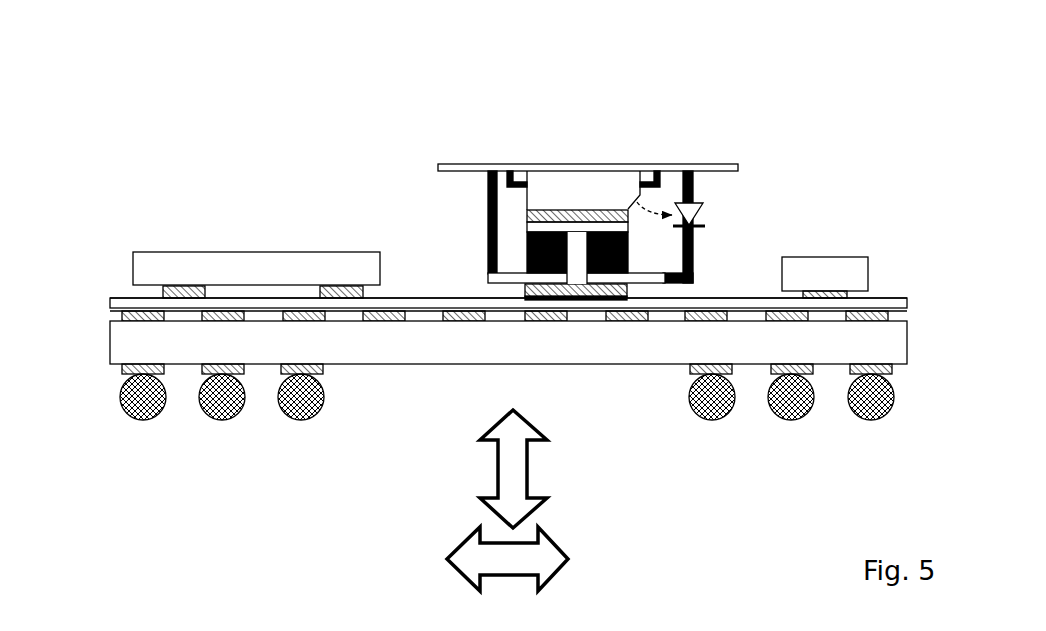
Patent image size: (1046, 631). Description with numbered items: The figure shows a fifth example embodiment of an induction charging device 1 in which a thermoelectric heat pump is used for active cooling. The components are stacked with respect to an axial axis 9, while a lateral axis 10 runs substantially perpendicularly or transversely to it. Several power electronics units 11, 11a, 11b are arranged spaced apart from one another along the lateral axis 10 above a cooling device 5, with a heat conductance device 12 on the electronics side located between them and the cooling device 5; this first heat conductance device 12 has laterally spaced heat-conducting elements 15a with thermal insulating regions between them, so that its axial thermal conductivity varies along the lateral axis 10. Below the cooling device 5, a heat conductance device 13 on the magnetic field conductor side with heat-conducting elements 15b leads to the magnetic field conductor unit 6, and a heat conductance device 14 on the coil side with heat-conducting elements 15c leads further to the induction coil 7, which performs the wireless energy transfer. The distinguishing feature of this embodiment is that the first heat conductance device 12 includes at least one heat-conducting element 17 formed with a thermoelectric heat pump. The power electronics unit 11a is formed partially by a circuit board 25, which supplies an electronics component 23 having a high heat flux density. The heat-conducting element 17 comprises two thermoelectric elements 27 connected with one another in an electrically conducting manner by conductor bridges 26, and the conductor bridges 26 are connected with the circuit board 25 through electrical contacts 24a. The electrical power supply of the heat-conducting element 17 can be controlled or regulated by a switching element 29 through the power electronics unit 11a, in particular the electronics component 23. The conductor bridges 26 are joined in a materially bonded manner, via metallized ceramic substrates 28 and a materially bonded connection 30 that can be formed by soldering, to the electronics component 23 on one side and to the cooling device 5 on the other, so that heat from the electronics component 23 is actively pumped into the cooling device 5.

The induction charging device 1 is at (93, 122).
The cooling device 5 is at (113, 297).
The magnetic field conductor unit 6 is at (122, 348).
The induction coil 7 is at (213, 415).
The axial axis 9 is at (512, 470).
The lateral axis 10 is at (485, 556).
The power electronics unit 11 is at (218, 230).
The power electronics unit 11a is at (563, 153).
The power electronics unit 11b is at (831, 275).
The heat conductance device on the electronics side 12 is at (885, 294).
The heat conductance device on the magnetic field conductor side 13 is at (504, 314).
The heat conductance device on the coil side 14 is at (505, 387).
The heat-conducting elements 15a is at (170, 287).
The heat-conducting elements 15b is at (122, 314).
The heat-conducting elements 15c is at (120, 374).
The heat-conducting element 17 is at (563, 175).
The electronics component 23 is at (537, 202).
The electrical contacts 24a is at (485, 185).
The circuit board 25 is at (465, 163).
The conductor bridges 26 is at (522, 228).
The thermoelectric elements 27 is at (608, 231).
The metallized ceramic substrates 28 is at (522, 217).
The switching element 29 is at (668, 212).
The materially bonded connection 30 is at (522, 296).